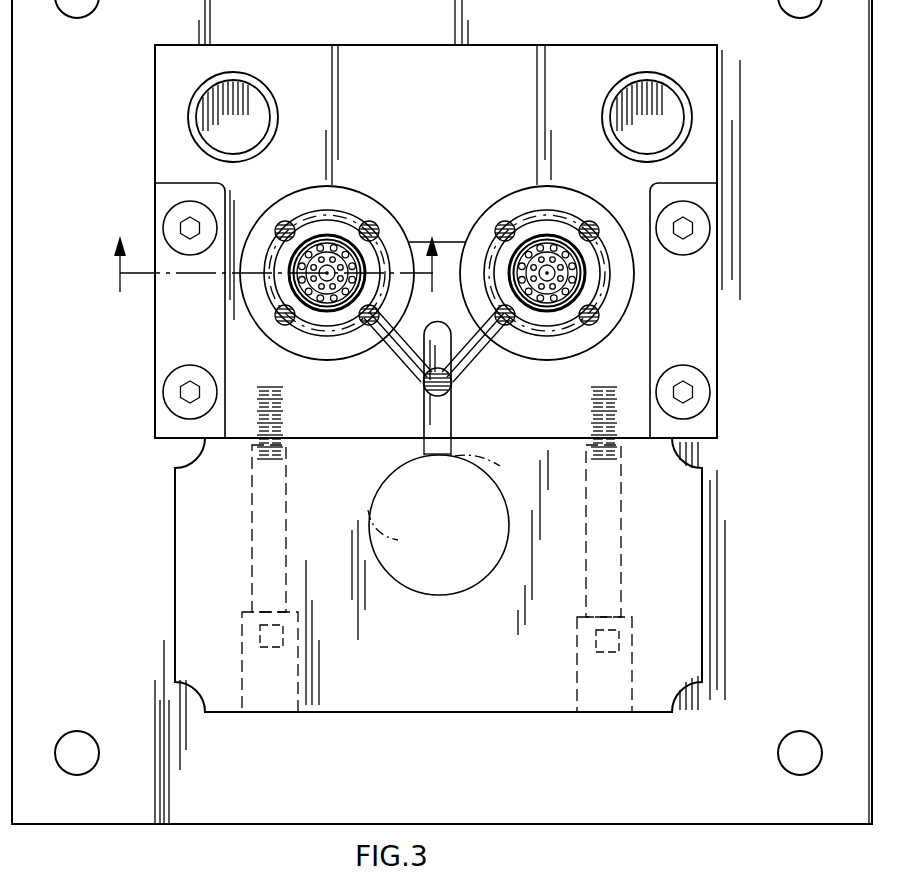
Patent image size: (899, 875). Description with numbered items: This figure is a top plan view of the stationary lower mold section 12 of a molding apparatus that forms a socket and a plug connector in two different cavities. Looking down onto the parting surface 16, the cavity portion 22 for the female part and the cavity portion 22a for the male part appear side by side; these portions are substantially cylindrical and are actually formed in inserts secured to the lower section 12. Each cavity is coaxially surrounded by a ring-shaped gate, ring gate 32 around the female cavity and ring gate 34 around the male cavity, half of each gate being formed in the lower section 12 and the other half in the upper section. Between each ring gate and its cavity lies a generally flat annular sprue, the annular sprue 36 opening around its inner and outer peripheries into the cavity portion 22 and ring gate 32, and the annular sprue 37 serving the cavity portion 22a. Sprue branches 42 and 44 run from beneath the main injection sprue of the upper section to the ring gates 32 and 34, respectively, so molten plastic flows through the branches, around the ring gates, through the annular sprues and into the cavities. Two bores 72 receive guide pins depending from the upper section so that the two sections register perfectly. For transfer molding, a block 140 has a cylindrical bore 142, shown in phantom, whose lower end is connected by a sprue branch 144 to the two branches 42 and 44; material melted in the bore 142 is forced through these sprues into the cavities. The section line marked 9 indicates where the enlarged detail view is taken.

The section line 9- 9 is at (276, 250).
The lower mold section 12 is at (732, 196).
The parting surface 16 is at (452, 133).
The cavity portion 22 is at (336, 318).
The cavity portion 22a is at (556, 306).
The ring gate 32 is at (381, 215).
The ring gate 34 is at (606, 219).
The annular sprue 36 is at (294, 217).
The annular sprue 37 is at (508, 216).
The sprue branch 42 is at (406, 352).
The sprue branch 44 is at (478, 348).
The bores 72 is at (266, 110).
The block 140 is at (436, 627).
The cylindrical bore 142 is at (395, 530).
The sprue branch 144 is at (462, 456).